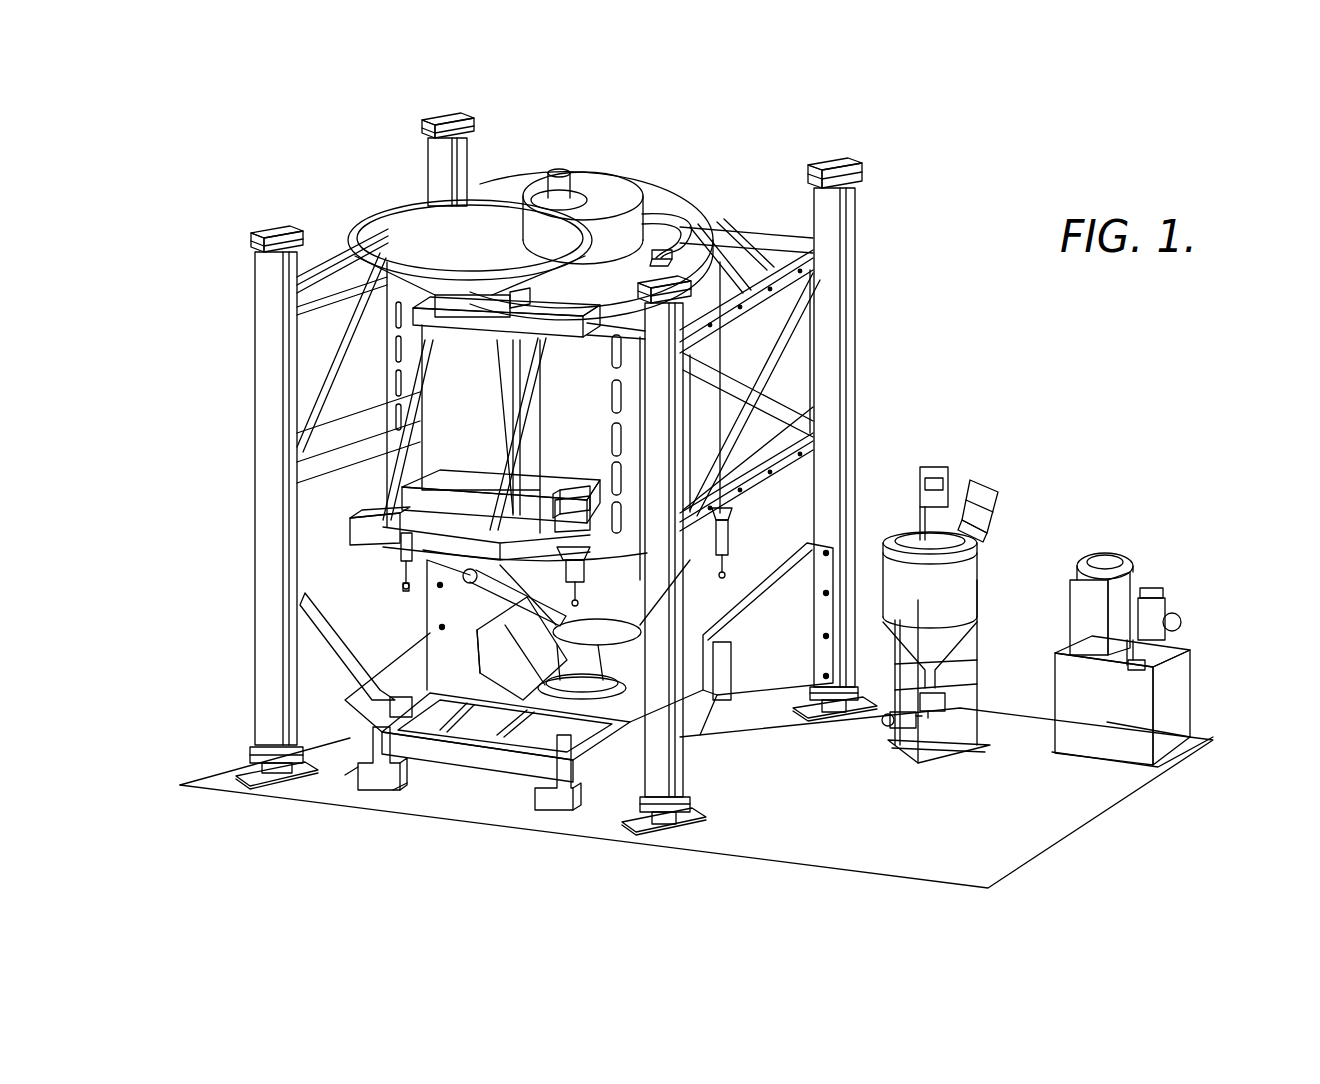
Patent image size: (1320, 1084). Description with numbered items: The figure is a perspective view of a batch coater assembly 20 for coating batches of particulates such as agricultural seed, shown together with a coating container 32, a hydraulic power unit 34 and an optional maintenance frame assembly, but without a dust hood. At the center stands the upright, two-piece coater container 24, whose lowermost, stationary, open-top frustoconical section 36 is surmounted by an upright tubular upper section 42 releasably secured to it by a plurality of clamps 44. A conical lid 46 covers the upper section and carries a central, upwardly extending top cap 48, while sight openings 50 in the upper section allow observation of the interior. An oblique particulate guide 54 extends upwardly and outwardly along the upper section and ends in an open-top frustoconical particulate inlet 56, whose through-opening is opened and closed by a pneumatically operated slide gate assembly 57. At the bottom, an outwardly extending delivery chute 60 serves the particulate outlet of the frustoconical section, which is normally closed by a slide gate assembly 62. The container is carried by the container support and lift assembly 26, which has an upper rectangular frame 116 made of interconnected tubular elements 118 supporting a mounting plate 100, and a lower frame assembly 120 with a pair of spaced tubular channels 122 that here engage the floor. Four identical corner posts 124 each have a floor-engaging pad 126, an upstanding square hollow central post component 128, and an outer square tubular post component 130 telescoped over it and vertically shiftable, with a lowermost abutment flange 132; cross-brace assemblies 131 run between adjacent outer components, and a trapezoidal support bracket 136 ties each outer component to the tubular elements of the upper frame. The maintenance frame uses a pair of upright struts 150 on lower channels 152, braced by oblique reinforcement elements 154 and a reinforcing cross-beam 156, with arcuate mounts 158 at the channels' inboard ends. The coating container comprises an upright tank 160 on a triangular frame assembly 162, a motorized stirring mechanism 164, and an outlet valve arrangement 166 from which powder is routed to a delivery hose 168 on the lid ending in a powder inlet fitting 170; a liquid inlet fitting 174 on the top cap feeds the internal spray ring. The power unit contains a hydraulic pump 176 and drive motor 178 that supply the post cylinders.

The batch coater assembly 20 is at (1006, 211).
The coater container 24 is at (730, 357).
The container support and lift assembly 26 is at (742, 750).
The coating container 32 is at (1030, 517).
The hydraulic power unit 34 is at (1188, 580).
The frustoconical section 36 is at (410, 586).
The tubular upper section 42 is at (746, 263).
The clamps 44 is at (402, 563).
The conical lid 46 is at (698, 243).
The top cap 48 is at (622, 192).
The sight openings 50 is at (613, 380).
The oblique particulate guide 54 is at (437, 353).
The frustoconical particulate inlet 56 is at (410, 225).
The slide gate assembly 57 is at (549, 291).
The delivery chute 60 is at (497, 646).
The slide gate assembly 62 is at (455, 607).
The mounting plate 100 is at (377, 698).
The upper rectangular frame 116 is at (498, 800).
The tubular elements 118 is at (467, 757).
The lower frame assembly 120 is at (337, 792).
The tubular metallic channels 122 is at (380, 784).
The corner posts 124 is at (489, 131).
The floor-engaging pad 126 is at (250, 769).
The central post component 128 is at (265, 774).
The outer tubular post component 130 is at (437, 151).
The cross-brace assemblies 131 is at (345, 252).
The abutment flange 132 is at (252, 747).
The support bracket 136 is at (430, 620).
The upright struts 150 is at (527, 428).
The lower channels 152 is at (367, 517).
The oblique reinforcement elements 154 is at (507, 439).
The reinforcing cross-beam 156 is at (447, 510).
The arcuate mounts 158 is at (577, 493).
The upright tank 160 is at (950, 597).
The triangular frame assembly 162 is at (980, 677).
The motorized stirring mechanism 164 is at (988, 489).
The outlet valve arrangement 166 is at (937, 722).
The delivery hose 168 is at (666, 218).
The powder inlet fitting 170 is at (664, 256).
The liquid inlet fitting 174 is at (598, 182).
The hydraulic pump 176 is at (1150, 622).
The drive motor 178 is at (1115, 557).